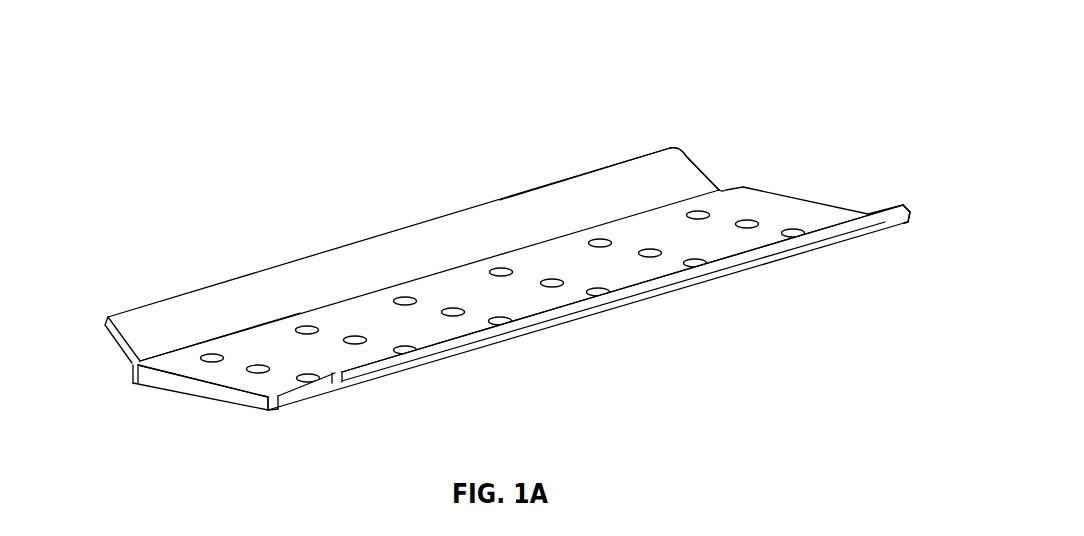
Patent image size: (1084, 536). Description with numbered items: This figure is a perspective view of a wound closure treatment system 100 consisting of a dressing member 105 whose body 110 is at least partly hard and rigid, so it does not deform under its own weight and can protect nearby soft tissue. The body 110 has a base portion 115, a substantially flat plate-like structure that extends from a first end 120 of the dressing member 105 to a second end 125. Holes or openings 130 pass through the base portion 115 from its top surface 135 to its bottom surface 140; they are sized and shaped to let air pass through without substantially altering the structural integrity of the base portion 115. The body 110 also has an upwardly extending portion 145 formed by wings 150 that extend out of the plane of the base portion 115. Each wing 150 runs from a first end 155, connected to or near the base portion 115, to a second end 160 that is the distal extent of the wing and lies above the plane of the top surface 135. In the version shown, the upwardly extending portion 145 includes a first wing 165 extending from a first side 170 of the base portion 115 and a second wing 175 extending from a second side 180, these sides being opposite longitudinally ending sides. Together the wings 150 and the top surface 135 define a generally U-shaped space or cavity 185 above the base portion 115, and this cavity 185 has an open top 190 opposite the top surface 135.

The wound closure treatment system 100 is at (774, 32).
The dressing member 105 is at (806, 65).
The body 110 is at (828, 98).
The base portion 115 is at (242, 370).
The first end 120 is at (117, 256).
The second end 125 is at (653, 135).
The holes or openings 130 is at (553, 287).
The top surface 135 is at (430, 328).
The bottom surface 140 is at (264, 414).
The upwardly extending portion 145 is at (97, 336).
The wings 150 is at (277, 278).
The first end of wing 155 is at (187, 348).
The second end of wing 160 is at (208, 285).
The first wing 165 is at (688, 175).
The first side 170 is at (716, 164).
The second wing 175 is at (897, 217).
The second side 180 is at (919, 187).
The space or cavity 185 is at (811, 188).
The open top 190 is at (650, 192).